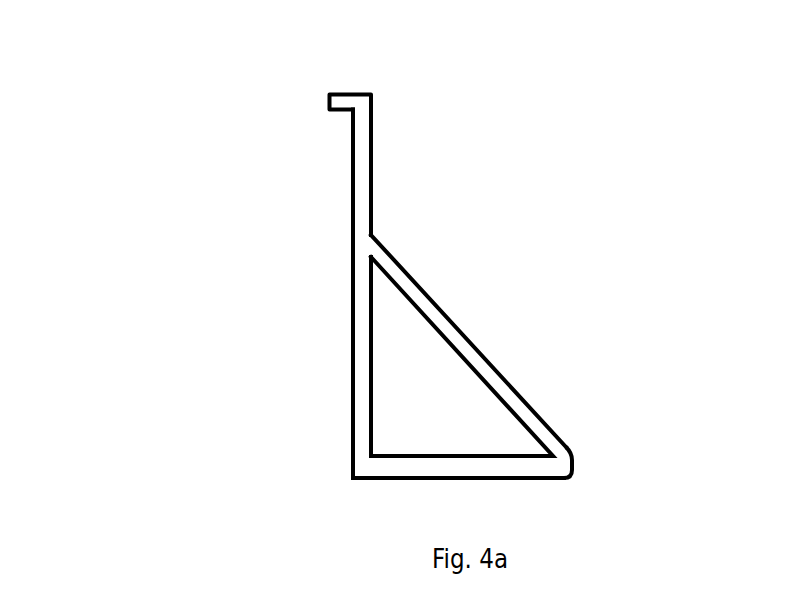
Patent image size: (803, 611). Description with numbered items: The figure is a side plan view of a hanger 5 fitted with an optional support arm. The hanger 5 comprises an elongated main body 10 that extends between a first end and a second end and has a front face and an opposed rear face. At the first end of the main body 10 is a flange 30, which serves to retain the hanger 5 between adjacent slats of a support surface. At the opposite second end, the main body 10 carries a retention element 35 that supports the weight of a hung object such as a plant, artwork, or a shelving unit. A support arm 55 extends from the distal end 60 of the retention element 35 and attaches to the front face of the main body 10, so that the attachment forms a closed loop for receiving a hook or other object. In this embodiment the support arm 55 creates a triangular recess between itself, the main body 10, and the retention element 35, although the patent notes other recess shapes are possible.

The hanger 5 is at (160, 130).
The main body 10 is at (362, 323).
The flange 30 is at (345, 100).
The retention element 35 is at (441, 465).
The support arm 55 is at (490, 378).
The distal end 60 is at (560, 459).